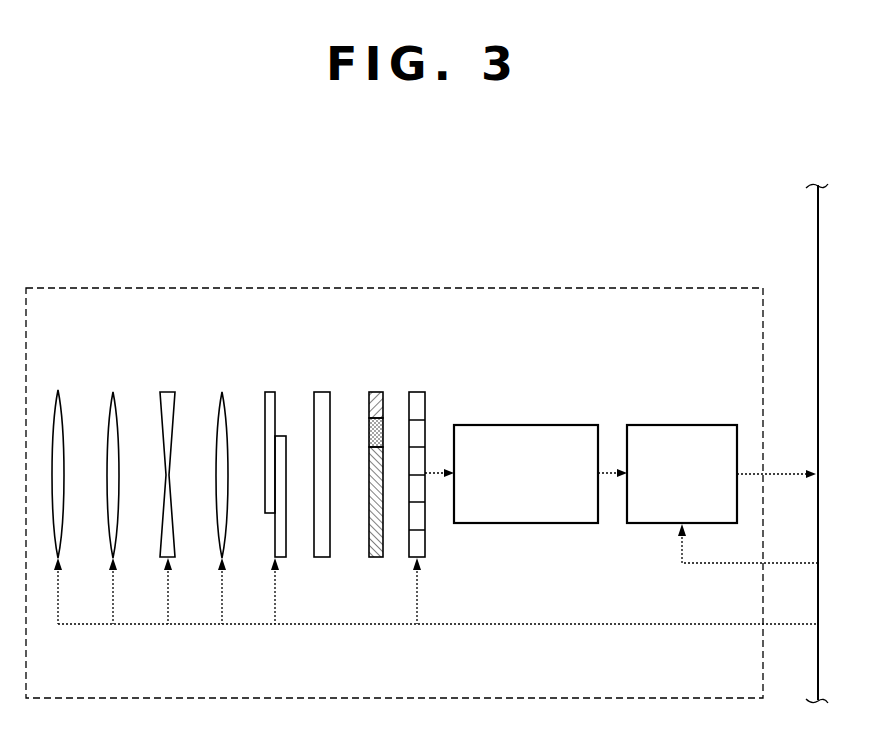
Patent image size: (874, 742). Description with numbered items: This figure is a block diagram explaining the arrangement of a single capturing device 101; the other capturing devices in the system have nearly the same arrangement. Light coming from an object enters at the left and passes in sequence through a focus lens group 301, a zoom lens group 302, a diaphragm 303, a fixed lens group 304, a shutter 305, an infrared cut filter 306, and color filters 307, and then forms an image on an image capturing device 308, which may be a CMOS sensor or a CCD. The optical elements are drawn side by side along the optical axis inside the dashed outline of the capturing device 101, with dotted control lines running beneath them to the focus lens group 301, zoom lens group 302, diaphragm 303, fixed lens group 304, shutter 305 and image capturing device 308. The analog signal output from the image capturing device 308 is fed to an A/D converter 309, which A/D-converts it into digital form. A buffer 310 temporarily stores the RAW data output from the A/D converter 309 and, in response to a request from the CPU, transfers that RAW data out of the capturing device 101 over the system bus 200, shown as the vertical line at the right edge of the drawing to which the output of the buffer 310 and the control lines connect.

The capturing device 101 is at (710, 287).
The system bus 200 is at (817, 211).
The focus lens group 301 is at (58, 390).
The zoom lens group 302 is at (113, 392).
The diaphragm 303 is at (168, 392).
The fixed lens group 304 is at (222, 392).
The shutter 305 is at (270, 392).
The infrared cut filter 306 is at (322, 392).
The color filters 307 is at (375, 392).
The image capturing device 308 is at (420, 392).
The A/D converter 309 is at (531, 425).
The buffer 310 is at (692, 425).